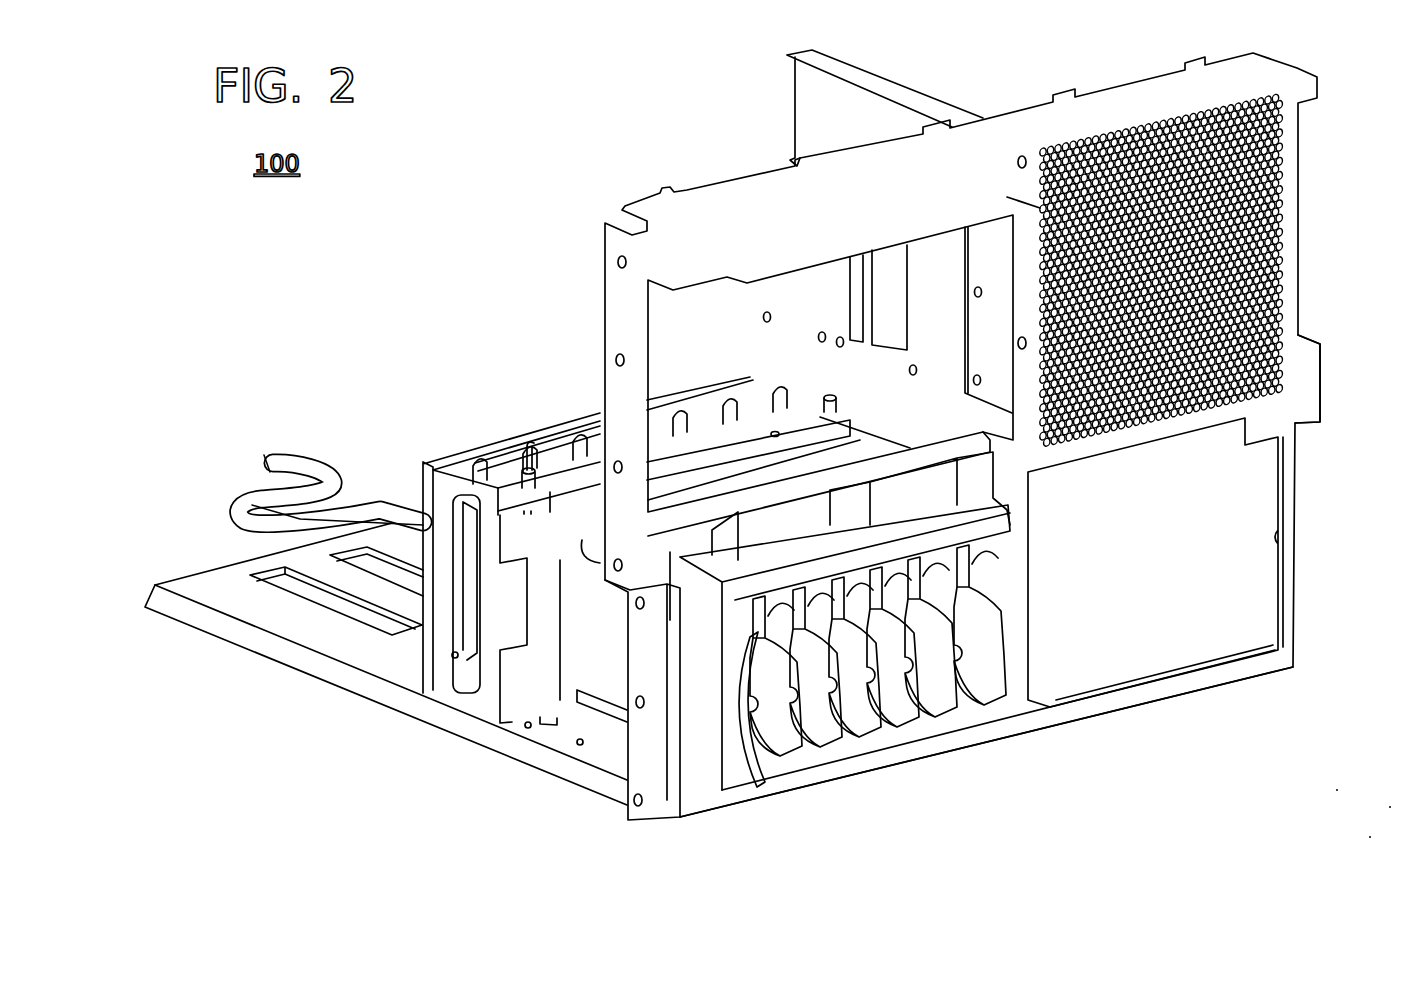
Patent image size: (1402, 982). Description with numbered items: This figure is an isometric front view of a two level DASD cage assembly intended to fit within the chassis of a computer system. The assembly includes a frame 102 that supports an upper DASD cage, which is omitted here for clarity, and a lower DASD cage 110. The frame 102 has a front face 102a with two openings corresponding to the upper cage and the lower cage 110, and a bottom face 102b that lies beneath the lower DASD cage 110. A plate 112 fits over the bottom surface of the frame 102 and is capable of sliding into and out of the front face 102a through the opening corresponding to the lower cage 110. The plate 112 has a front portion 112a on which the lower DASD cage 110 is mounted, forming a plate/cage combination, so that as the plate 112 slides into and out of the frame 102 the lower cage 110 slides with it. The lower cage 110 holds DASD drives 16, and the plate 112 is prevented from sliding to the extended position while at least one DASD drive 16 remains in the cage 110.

The frame 102 is at (1260, 66).
The front face 102a is at (1306, 383).
The bottom face 102b is at (189, 626).
The lower DASD cage 110 is at (588, 648).
The plate 112 is at (203, 579).
The front portion 112a is at (590, 765).
The DASD drives 16 is at (996, 673).